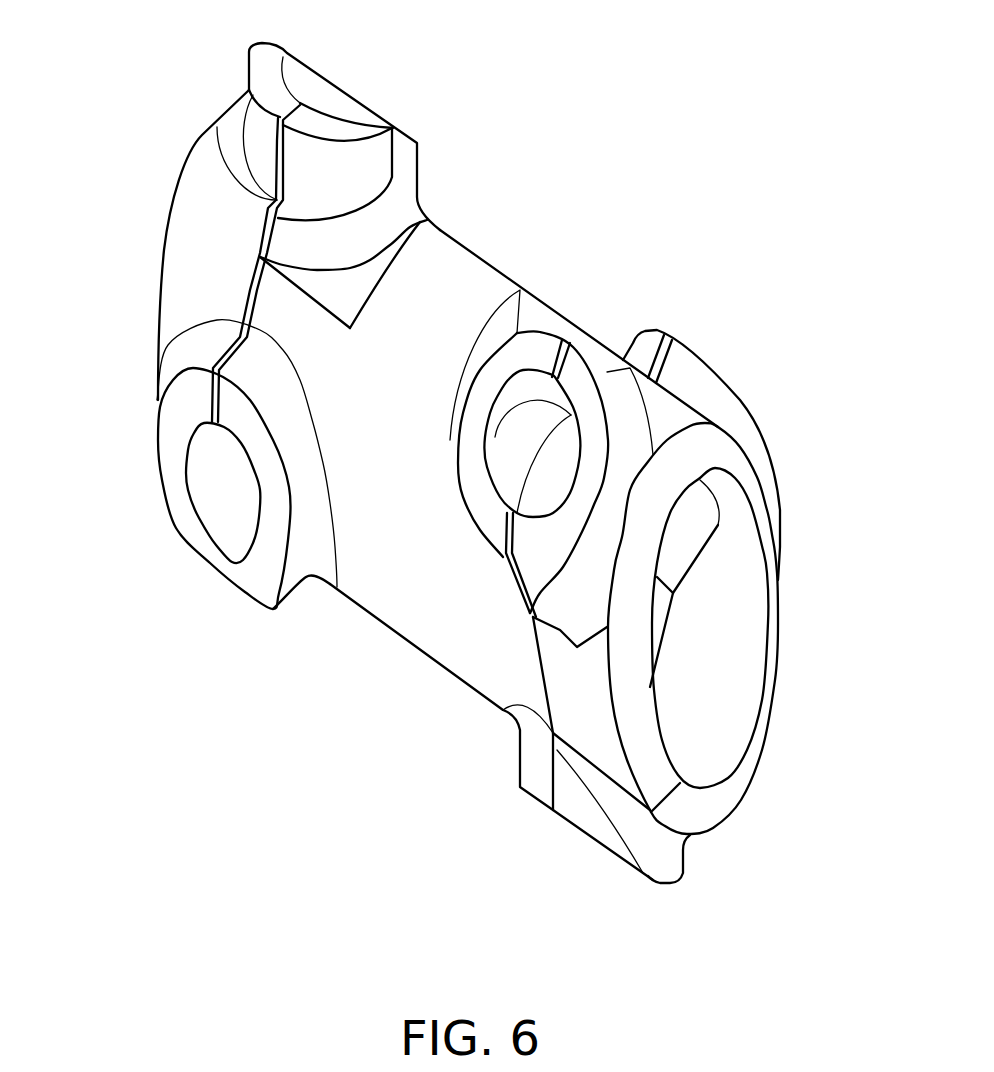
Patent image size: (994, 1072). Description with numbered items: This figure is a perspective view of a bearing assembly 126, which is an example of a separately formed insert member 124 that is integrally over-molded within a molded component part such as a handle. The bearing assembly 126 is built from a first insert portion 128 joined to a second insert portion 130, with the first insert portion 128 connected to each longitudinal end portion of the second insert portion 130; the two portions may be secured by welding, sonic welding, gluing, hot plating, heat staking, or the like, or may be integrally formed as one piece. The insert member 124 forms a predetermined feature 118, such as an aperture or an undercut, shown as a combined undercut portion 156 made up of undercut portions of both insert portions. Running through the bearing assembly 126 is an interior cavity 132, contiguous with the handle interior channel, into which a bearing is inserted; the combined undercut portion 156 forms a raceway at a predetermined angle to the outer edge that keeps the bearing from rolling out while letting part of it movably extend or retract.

The insert member 124 is at (636, 66).
The second insert portion 130 is at (460, 270).
The predetermined feature 118 is at (203, 500).
The combined undercut portion 156 is at (200, 558).
The bearing assembly 126 is at (385, 645).
The first insert portion 128 is at (778, 623).
The interior cavity 132 is at (723, 708).